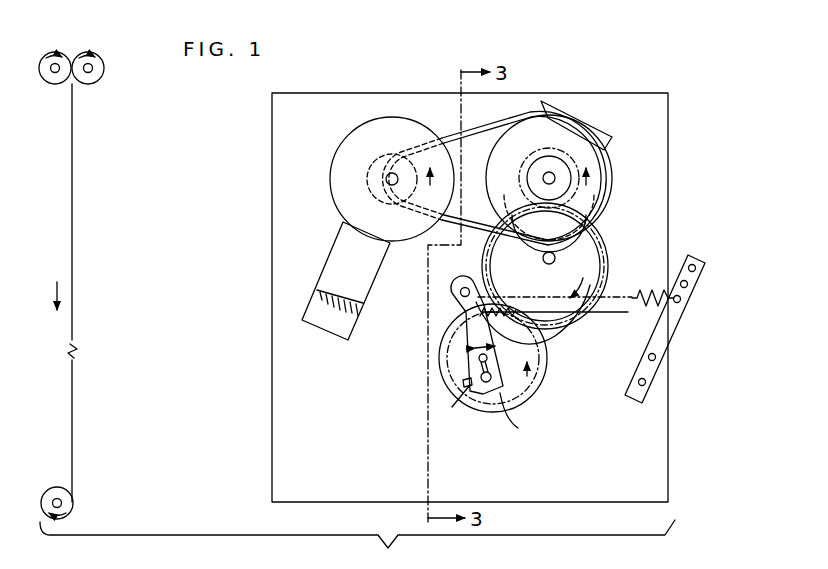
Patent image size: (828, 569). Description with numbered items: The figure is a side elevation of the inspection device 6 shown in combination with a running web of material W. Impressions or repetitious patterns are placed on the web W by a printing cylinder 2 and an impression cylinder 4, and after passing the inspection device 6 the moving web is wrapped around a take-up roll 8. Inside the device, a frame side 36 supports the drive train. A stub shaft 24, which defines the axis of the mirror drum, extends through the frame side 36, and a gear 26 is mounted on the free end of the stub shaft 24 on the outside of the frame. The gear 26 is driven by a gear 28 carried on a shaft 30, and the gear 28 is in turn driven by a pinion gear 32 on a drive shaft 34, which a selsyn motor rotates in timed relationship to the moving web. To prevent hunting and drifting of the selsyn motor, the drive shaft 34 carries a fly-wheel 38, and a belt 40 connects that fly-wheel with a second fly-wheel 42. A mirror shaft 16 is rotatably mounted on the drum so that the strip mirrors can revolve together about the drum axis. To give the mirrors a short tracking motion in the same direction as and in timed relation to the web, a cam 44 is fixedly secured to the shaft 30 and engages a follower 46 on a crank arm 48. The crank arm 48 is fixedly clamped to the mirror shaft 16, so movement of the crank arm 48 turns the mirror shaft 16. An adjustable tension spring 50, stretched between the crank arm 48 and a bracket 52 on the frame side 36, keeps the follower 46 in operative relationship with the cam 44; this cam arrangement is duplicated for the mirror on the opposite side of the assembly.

The printing cylinder 2 is at (58, 82).
The impression cylinder 4 is at (92, 80).
The running web of material W is at (75, 243).
The inspection device 6 is at (258, 122).
The take-up roll 8 is at (72, 510).
The frame side 36 is at (272, 206).
The second fly-wheel 42 is at (340, 153).
The belt 40 is at (512, 120).
The fly-wheel 38 is at (610, 160).
The pinion gear 32 is at (526, 151).
The drive shaft 34 is at (545, 179).
The gear 28 is at (608, 266).
The shaft 30 is at (543, 261).
The follower 46 is at (463, 282).
The stub shaft 24 is at (495, 371).
The gear 26 is at (540, 407).
The mirror shaft 16 is at (558, 352).
The crank arm 48 is at (520, 419).
The cam 44 is at (575, 322).
The adjustable tension spring 50 is at (634, 298).
The bracket 52 is at (700, 278).